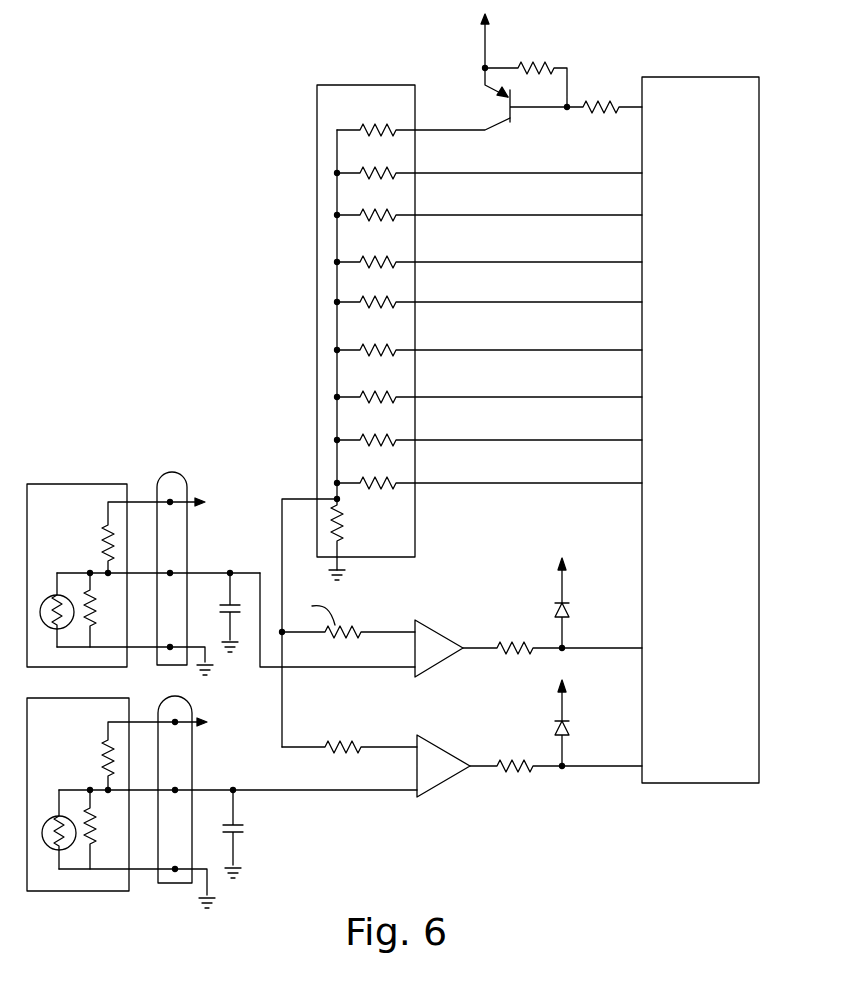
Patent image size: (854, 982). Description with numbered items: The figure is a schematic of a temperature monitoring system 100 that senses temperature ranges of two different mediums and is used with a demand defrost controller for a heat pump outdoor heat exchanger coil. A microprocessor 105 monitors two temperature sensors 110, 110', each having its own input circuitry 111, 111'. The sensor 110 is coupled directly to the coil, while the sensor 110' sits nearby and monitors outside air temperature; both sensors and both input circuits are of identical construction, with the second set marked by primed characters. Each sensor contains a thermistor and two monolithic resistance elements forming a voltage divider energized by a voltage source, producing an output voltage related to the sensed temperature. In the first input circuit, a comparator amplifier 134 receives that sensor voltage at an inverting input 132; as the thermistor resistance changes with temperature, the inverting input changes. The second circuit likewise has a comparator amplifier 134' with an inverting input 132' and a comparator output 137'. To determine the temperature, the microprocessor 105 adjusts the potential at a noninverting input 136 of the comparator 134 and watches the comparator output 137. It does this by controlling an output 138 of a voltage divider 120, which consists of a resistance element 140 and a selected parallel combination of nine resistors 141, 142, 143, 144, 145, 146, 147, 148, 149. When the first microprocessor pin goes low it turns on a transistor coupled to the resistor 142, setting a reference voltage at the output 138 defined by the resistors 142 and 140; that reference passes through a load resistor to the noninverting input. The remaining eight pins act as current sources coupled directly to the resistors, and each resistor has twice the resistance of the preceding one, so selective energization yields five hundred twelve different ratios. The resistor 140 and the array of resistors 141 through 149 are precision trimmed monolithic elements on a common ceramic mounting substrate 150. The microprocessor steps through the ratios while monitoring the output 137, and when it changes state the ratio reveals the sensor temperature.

The temperature monitoring system 100 is at (491, 885).
The microprocessor 105 is at (713, 775).
The temperature sensor 110 is at (143, 546).
The temperature sensor 110' is at (152, 829).
The input circuitry 111 is at (451, 606).
The input circuitry 111' is at (385, 769).
The voltage divider 120 is at (323, 274).
The inverting input 132 is at (363, 637).
The inverting input 132' is at (273, 817).
The comparator amplifier 134 is at (453, 624).
The comparator amplifier 134' is at (452, 782).
The noninverting input 136 is at (413, 624).
The comparator output 137 is at (581, 594).
The comparator output 137' is at (576, 742).
The voltage divider output 138 is at (302, 499).
The resistance element 140 is at (346, 548).
The resistor 141 is at (362, 129).
The resistor 142 is at (398, 174).
The resistor 143 is at (398, 214).
The resistor 144 is at (398, 261).
The resistor 145 is at (398, 301).
The resistor 146 is at (398, 349).
The resistor 147 is at (398, 396).
The resistor 148 is at (398, 438).
The resistor 149 is at (398, 482).
The ceramic mounting substrate 150 is at (325, 118).